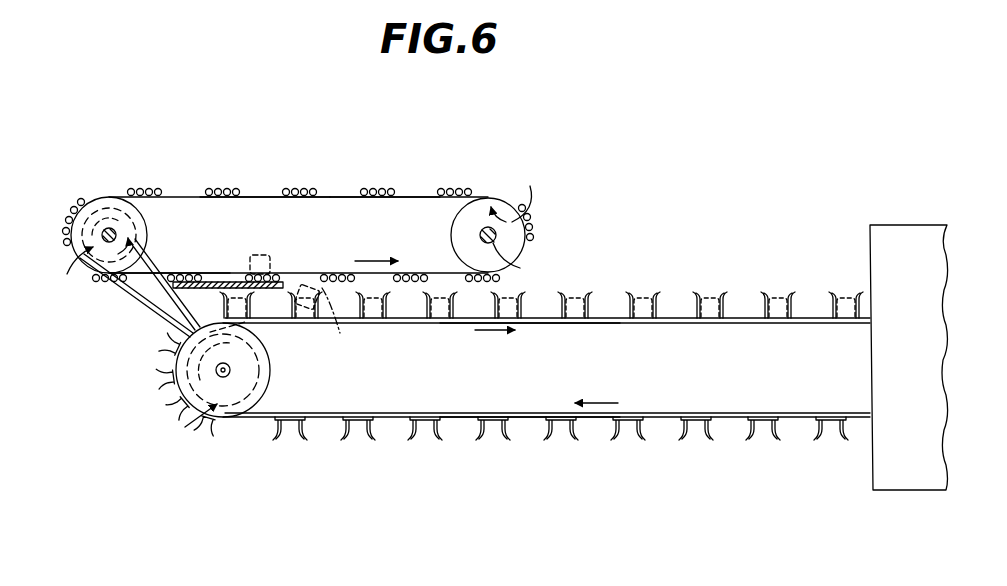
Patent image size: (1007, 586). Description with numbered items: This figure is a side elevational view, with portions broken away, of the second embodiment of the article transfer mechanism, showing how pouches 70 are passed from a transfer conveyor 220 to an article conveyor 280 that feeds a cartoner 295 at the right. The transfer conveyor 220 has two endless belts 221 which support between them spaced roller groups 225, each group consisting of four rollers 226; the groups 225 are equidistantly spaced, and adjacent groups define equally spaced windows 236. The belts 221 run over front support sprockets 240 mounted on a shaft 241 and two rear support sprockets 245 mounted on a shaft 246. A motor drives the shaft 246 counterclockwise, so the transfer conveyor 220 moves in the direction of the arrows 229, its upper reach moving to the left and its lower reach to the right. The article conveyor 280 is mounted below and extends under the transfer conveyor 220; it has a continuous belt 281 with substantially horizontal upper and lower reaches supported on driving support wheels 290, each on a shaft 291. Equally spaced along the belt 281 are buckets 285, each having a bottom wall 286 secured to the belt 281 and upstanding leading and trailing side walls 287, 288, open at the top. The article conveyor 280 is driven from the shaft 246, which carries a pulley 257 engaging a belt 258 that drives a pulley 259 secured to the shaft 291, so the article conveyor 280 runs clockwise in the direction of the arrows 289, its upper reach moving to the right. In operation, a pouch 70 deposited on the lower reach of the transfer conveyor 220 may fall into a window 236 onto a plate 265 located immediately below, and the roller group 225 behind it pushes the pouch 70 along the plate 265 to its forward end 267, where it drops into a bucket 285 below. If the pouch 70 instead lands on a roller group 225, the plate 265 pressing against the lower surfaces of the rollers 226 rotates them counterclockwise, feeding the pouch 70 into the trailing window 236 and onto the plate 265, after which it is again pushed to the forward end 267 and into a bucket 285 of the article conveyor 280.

The pouch 70 is at (270, 256).
The transfer conveyor 220 is at (185, 172).
The endless belt 221 is at (334, 193).
The roller group 225 is at (234, 182).
The roller 226 is at (533, 230).
The arrows 229 is at (380, 250).
The window 236 is at (92, 197).
The front support sprocket 240 is at (530, 250).
The shaft 241 is at (529, 263).
The rear support sprocket 245 is at (116, 212).
The shaft 246 is at (100, 236).
The pulley 257 is at (147, 238).
The belt 258 is at (140, 284).
The pulley 259 is at (247, 338).
The plate 265 is at (228, 297).
The forward end 267 is at (258, 305).
The article conveyor 280 is at (563, 463).
The continuous belt 281 is at (606, 323).
The bucket 285 is at (420, 310).
The bottom wall 286 is at (355, 415).
The leading side wall 287 is at (341, 426).
The trailing side wall 288 is at (373, 427).
The arrows 289 is at (620, 386).
The driving support wheel 290 is at (260, 377).
The shaft 291 is at (218, 373).
The cartoner 295 is at (896, 224).